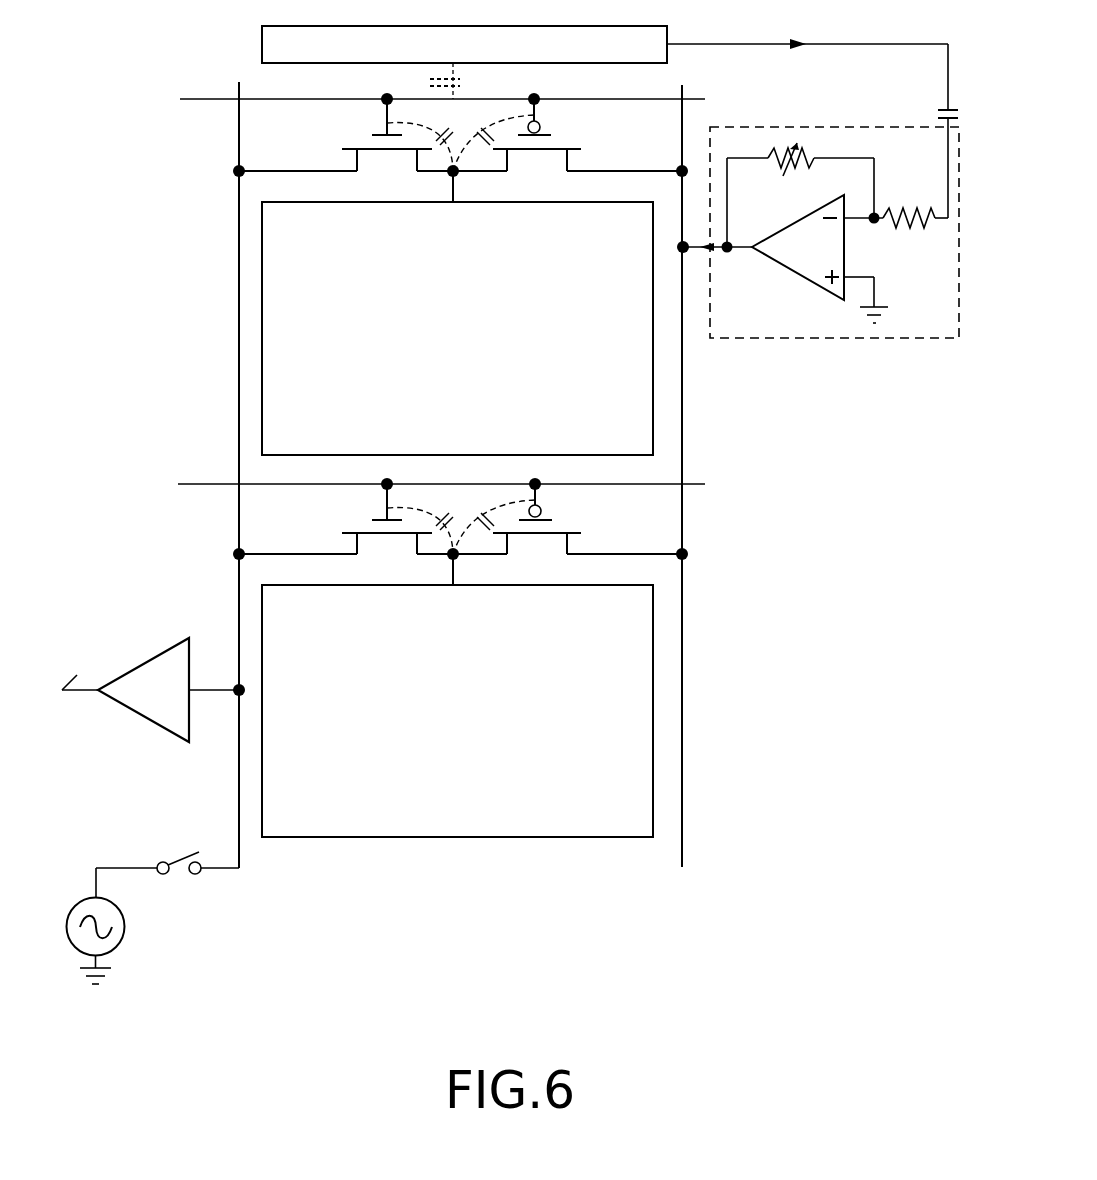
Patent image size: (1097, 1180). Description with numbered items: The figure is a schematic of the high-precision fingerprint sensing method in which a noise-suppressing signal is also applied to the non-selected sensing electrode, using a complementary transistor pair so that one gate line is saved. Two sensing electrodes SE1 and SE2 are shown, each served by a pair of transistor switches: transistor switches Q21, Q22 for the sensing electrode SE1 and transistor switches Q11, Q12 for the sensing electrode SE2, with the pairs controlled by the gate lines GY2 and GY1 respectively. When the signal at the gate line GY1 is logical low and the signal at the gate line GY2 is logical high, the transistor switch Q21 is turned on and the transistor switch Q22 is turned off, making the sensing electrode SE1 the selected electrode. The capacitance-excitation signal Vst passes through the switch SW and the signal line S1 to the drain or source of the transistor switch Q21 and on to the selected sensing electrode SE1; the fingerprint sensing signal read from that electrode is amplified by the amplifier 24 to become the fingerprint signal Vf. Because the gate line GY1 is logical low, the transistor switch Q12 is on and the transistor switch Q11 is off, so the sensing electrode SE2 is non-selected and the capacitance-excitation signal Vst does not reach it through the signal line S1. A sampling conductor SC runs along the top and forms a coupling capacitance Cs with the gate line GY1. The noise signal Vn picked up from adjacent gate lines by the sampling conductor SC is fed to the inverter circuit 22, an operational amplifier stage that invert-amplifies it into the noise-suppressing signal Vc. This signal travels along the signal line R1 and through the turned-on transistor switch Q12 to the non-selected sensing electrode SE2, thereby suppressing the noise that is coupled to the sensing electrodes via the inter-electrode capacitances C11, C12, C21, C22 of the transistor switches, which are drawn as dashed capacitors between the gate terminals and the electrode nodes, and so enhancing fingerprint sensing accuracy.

The inverter circuit 22 is at (832, 330).
The amplifier 24 is at (146, 711).
The sampling conductor SC is at (464, 44).
The coupling capacitance Cs is at (463, 81).
The gate line GY1 is at (396, 100).
The gate line GY2 is at (396, 484).
The signal line S1 is at (261, 482).
The signal line R1 is at (704, 483).
The transistor switch Q11 is at (373, 145).
The transistor switch Q12 is at (587, 145).
The transistor switch Q21 is at (373, 530).
The transistor switch Q22 is at (587, 530).
The inter-electrode capacitance C11 is at (422, 134).
The inter-electrode capacitance C12 is at (493, 134).
The inter-electrode capacitance C21 is at (422, 518).
The inter-electrode capacitance C22 is at (494, 518).
The sensing electrode SE1 is at (457, 711).
The sensing electrode SE2 is at (457, 328).
The noise signal Vn is at (812, 112).
The switch SW is at (167, 879).
The capacitance-excitation signal Vst is at (119, 926).